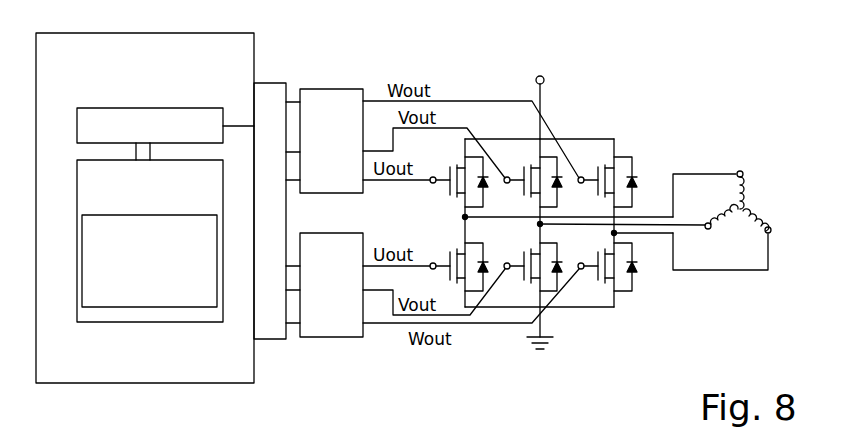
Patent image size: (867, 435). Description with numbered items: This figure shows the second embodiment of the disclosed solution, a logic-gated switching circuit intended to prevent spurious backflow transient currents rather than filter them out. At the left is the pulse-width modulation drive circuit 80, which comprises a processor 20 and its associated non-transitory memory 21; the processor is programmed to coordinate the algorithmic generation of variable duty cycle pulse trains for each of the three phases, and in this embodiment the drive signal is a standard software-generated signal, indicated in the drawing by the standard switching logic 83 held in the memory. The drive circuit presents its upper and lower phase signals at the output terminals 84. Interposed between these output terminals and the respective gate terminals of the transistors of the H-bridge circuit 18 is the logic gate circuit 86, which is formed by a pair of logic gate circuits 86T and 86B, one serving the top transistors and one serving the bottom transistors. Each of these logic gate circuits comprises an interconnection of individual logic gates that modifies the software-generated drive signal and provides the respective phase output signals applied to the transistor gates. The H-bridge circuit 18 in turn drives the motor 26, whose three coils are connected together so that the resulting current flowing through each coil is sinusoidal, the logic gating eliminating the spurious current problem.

The pulse-width modulation drive circuit 80 is at (115, 38).
The processor 20 is at (82, 114).
The non-transitory memory 21 is at (84, 173).
The standard switching logic 83 is at (146, 306).
The output terminals 84 is at (270, 83).
The logic gate circuit 86 is at (456, 434).
The logic gate circuit 86T is at (322, 93).
The logic gate circuit 86B is at (345, 337).
The H-bridge circuit 18 is at (595, 121).
The motor 26 is at (753, 160).